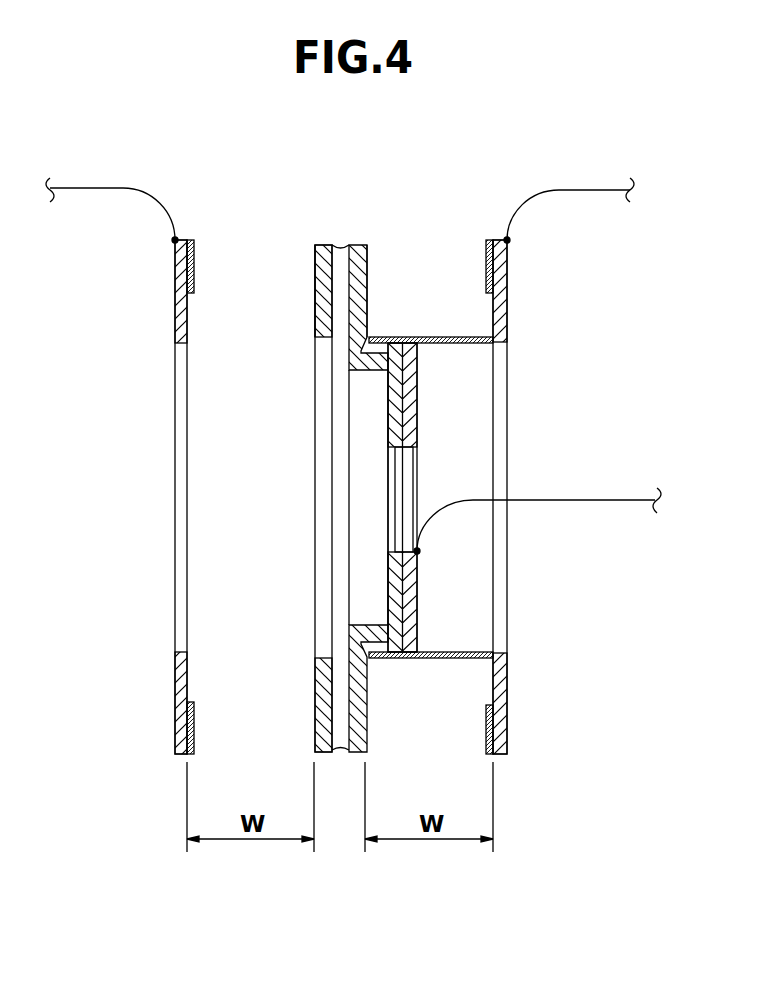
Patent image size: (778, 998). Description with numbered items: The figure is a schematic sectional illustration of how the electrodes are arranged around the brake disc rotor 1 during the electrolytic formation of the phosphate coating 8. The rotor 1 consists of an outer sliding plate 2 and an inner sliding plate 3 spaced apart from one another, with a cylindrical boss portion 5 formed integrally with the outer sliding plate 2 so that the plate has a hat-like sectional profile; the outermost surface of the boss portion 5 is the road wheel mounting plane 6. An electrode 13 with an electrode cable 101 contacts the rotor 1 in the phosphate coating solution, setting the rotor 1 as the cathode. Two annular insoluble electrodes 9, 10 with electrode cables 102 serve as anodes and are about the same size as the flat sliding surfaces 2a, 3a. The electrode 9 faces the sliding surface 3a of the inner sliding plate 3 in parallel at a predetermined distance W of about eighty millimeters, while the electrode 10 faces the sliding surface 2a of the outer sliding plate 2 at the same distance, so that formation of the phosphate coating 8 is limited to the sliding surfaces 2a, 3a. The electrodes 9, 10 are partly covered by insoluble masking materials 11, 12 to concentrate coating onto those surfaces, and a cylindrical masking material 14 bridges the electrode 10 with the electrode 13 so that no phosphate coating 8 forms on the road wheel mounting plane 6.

The brake disc rotor 1 is at (322, 499).
The outer sliding plate 2 is at (378, 498).
The sliding surface of outer sliding plate 2a is at (374, 266).
The inner sliding plate 3 is at (320, 319).
The sliding surface of inner sliding plate 3a is at (309, 266).
The cylindrical boss portion 5 is at (383, 637).
The road wheel mounting plane 6 is at (472, 497).
The phosphate coating 8 is at (332, 239).
The annular insoluble electrode 9 is at (187, 491).
The annular insoluble electrode 10 is at (495, 498).
The insoluble masking material 11 is at (197, 268).
The insoluble masking material 12 is at (486, 264).
The electrode 13 is at (418, 596).
The cylindrical masking material 14 is at (443, 337).
The electrode cable 101 is at (605, 500).
The electrode cables 102 is at (97, 188).